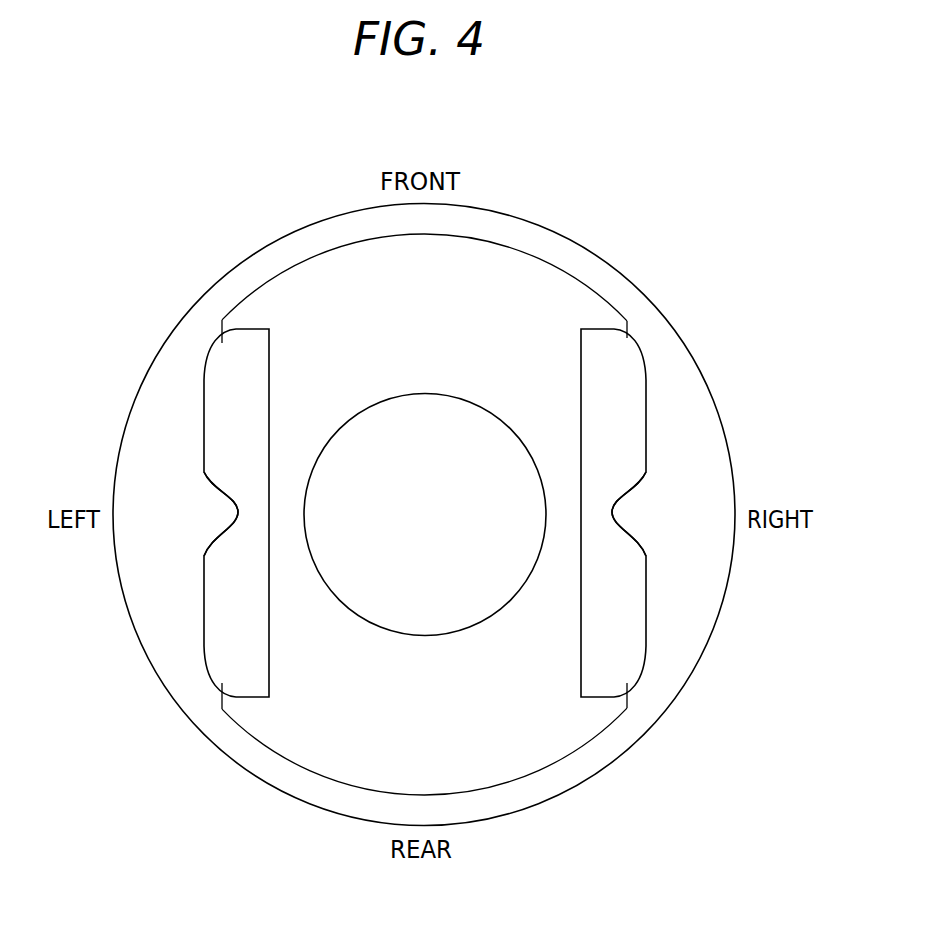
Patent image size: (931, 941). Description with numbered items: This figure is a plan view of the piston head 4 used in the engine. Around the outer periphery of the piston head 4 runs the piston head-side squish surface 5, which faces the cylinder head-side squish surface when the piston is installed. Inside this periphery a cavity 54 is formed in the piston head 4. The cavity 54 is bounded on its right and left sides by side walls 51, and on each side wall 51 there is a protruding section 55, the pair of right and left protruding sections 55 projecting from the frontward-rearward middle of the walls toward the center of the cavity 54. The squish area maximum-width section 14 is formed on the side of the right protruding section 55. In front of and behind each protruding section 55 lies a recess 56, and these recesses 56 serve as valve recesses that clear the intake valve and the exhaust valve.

The piston head 4 is at (655, 298).
The piston head-side squish surface 5 is at (658, 380).
The squish area maximum-width section 14 is at (689, 490).
The side wall 51 is at (197, 437).
The cavity 54 is at (438, 322).
The protruding section 55 is at (220, 512).
The recess 56 is at (235, 565).